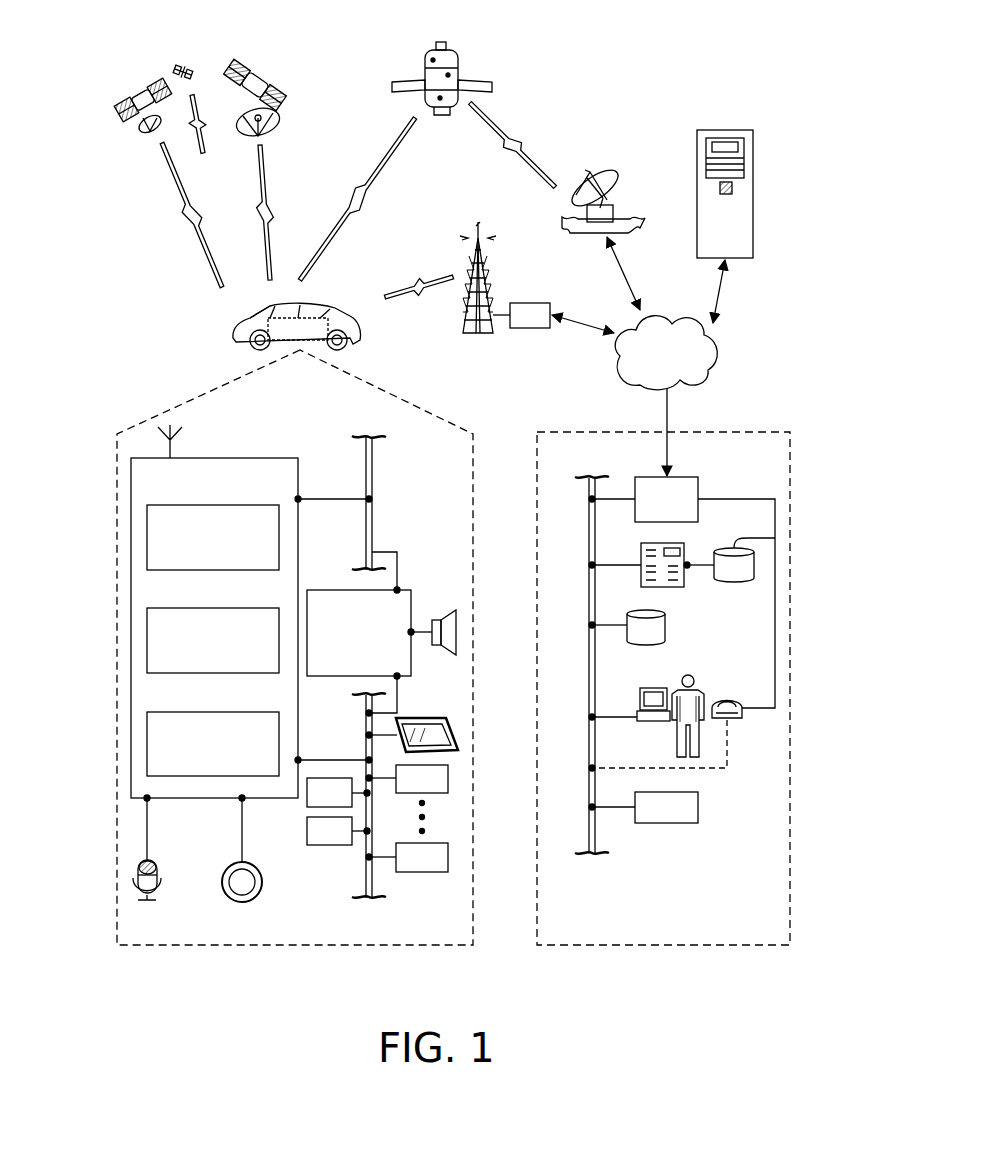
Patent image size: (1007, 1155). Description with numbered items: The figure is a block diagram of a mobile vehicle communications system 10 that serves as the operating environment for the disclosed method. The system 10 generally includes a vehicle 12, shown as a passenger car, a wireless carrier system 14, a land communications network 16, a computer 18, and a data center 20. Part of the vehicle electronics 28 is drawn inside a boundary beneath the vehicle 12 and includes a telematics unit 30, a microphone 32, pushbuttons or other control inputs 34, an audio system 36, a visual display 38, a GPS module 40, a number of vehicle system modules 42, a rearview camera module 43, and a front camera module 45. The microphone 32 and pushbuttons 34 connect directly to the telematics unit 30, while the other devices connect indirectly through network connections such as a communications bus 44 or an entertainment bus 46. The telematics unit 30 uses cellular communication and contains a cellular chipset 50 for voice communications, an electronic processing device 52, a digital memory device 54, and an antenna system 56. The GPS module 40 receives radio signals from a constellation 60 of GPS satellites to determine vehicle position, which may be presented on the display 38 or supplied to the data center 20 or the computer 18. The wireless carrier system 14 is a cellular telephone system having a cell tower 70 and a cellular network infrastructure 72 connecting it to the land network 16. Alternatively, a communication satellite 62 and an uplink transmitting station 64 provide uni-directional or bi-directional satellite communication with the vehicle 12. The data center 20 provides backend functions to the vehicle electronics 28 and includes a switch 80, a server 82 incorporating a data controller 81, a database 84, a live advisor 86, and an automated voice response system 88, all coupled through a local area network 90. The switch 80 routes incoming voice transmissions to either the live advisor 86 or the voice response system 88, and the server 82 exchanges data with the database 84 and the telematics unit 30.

The mobile vehicle communications system 10 is at (652, 68).
The vehicle 12 is at (326, 305).
The wireless carrier system 14 is at (462, 266).
The land communications network 16 is at (717, 348).
The computer 18 is at (725, 130).
The data center 20 is at (660, 948).
The vehicle electronics 28 is at (272, 948).
The telematics unit 30 is at (256, 458).
The microphone 32 is at (136, 888).
The pushbuttons or other control inputs 34 is at (262, 880).
The audio system 36 is at (398, 589).
The visual display 38 is at (424, 717).
The GPS module 40 is at (450, 781).
The vehicle system modules 42 is at (450, 860).
The rearview camera module 43 is at (318, 778).
The communications bus 44 is at (364, 878).
The front camera module 45 is at (307, 835).
The entertainment bus 46 is at (373, 472).
The cellular chipset 50 is at (147, 540).
The electronic processing device 52 is at (147, 644).
The digital memory device 54 is at (147, 744).
The antenna system 56 is at (166, 452).
The constellation of GPS satellites 60 is at (283, 137).
The communication satellite 62 is at (458, 62).
The uplink transmitting station 64 is at (612, 213).
The cell tower 70 is at (486, 258).
The cellular network infrastructure 72 is at (535, 330).
The switch 80 is at (700, 490).
The data controller 81 is at (778, 536).
The server 82 is at (641, 556).
The database 84 is at (636, 645).
The live advisor 86 is at (683, 745).
The automated voice response system 88 is at (700, 806).
The local area network 90 is at (597, 838).